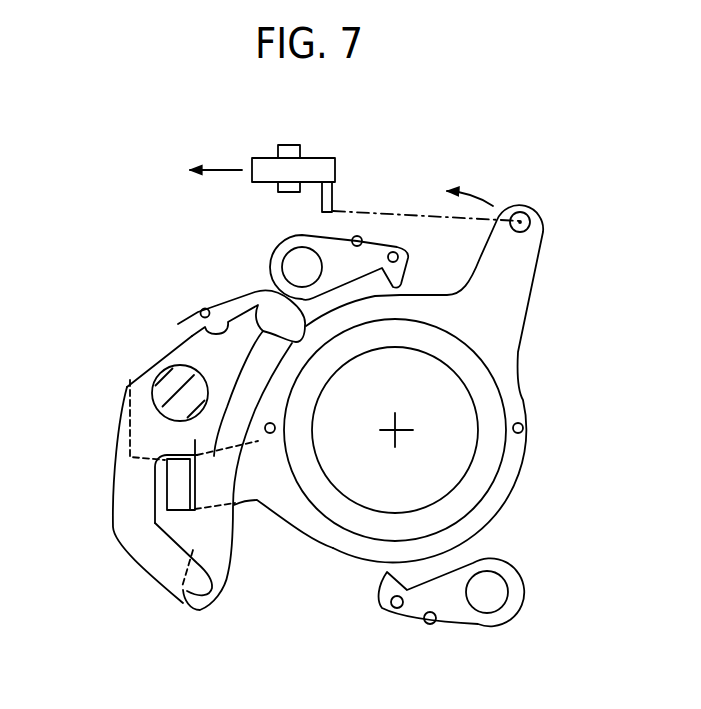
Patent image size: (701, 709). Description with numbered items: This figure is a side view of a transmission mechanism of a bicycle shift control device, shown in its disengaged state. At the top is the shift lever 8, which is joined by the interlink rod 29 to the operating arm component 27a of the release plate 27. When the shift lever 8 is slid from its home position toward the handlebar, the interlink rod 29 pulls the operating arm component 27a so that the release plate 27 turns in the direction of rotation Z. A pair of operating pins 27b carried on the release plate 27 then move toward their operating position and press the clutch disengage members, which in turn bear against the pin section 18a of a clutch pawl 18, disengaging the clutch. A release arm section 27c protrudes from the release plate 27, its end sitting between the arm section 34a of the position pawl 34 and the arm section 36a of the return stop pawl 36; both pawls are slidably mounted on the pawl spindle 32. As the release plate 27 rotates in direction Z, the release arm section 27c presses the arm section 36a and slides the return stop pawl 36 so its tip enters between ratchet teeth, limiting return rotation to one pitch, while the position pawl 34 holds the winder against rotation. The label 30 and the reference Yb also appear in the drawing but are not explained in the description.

The shift lever 8 is at (268, 158).
The clutch pawl 18 is at (308, 238).
The pin section 18a is at (398, 255).
The release plate 27 is at (520, 377).
The operating arm component 27a is at (533, 245).
The operating pin 27b is at (276, 427).
The release arm section 27c is at (253, 487).
The interlink rod 29 is at (415, 210).
The drive mechanism 30 is at (511, 174).
The pawl spindle 32 is at (167, 380).
The position pawl 34 is at (221, 306).
The arm section of position pawl 34a is at (212, 567).
The return stop pawl 36 is at (260, 312).
The arm section of return stop pawl 36a is at (127, 515).
The rotation axis Yb is at (393, 430).
The direction of rotation Z is at (545, 450).